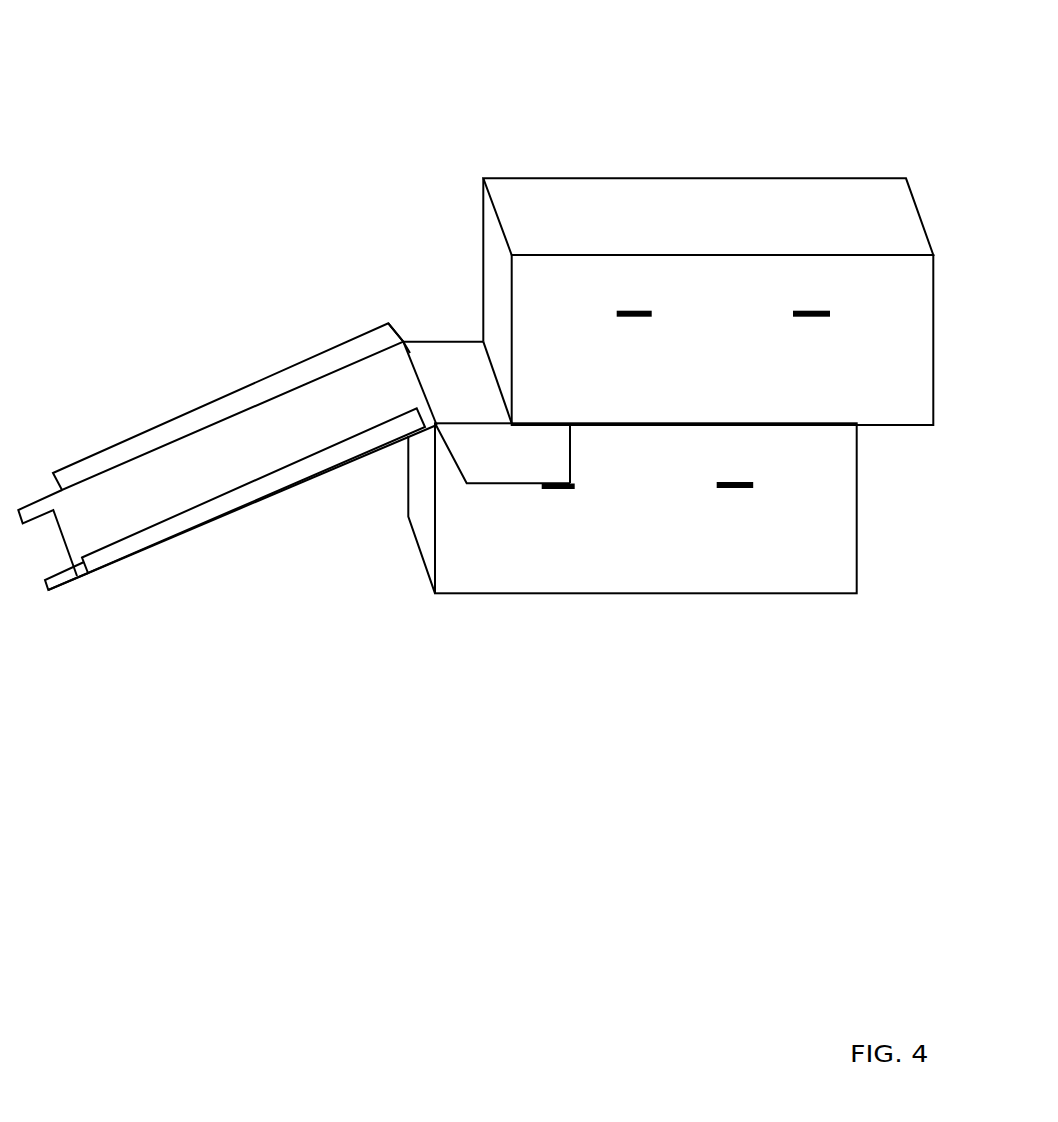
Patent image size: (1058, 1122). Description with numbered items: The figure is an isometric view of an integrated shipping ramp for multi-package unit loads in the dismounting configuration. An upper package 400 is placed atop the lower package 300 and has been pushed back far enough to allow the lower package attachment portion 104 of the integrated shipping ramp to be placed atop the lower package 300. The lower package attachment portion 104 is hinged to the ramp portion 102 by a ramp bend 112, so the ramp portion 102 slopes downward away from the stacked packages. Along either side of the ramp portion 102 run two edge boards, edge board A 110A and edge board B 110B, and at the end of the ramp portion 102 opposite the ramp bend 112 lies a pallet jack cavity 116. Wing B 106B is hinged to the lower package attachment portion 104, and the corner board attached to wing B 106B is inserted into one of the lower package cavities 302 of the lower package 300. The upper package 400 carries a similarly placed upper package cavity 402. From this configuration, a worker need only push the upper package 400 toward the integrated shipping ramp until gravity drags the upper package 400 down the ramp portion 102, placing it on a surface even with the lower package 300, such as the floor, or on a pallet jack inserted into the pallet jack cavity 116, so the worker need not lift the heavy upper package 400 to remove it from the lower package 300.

The ramp bend 112 is at (410, 353).
The lower package attachment portion 104 is at (444, 382).
The upper package cavity 402 is at (633, 313).
The edge board A 110A is at (80, 453).
The ramp portion 102 is at (143, 483).
The upper package 400 is at (738, 407).
The edge board B 110B is at (153, 537).
The lower package 300 is at (663, 585).
The pallet jack cavity 116 is at (53, 548).
The wing B 106B is at (522, 458).
The lower package cavity 302 is at (543, 487).